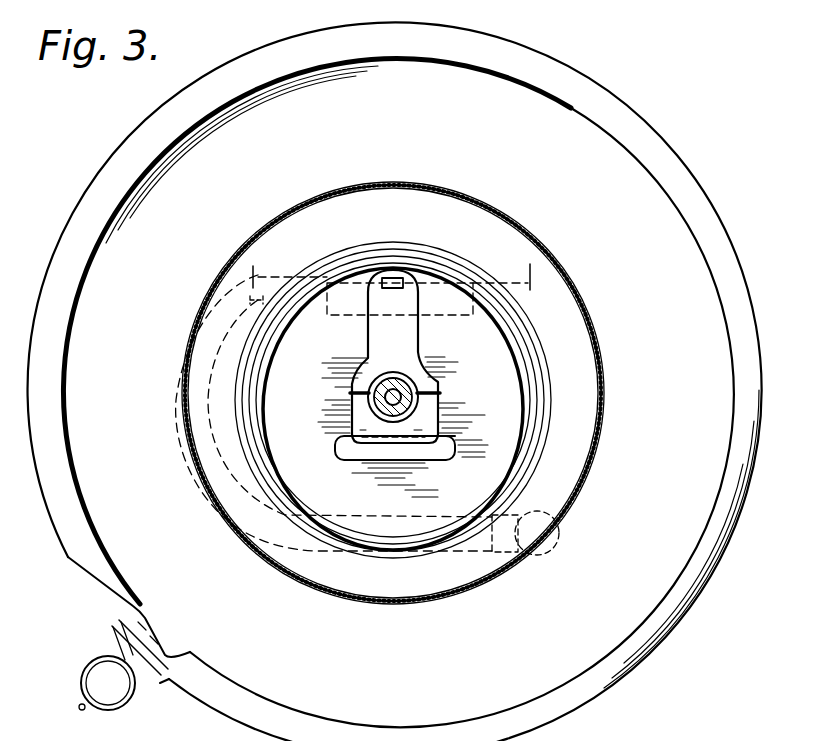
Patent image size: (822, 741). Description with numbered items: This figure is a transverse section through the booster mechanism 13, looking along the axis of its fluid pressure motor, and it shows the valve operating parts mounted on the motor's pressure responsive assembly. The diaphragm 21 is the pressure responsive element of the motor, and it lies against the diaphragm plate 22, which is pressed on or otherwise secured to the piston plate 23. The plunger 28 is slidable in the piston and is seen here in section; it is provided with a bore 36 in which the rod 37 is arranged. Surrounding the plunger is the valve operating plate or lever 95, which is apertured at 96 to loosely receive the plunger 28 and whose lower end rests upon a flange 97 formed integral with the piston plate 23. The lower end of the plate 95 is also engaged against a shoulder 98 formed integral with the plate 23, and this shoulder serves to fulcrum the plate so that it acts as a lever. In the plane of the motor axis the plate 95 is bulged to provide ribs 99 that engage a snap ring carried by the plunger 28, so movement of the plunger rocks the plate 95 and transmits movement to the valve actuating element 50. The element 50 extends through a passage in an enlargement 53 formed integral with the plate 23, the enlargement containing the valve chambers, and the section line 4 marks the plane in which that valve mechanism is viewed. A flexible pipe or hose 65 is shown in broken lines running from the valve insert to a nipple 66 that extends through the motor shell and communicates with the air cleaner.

The booster mechanism 13 is at (617, 99).
The diaphragm plate 22 is at (681, 160).
The diaphragm 21 is at (447, 198).
The piston plate 23 is at (502, 352).
The section line 4- 4 is at (391, 275).
The valve actuating element 50 is at (391, 289).
The enlargement 53 is at (345, 318).
The plunger 28 is at (390, 372).
The valve operating plate or lever 95 is at (412, 340).
The aperture 96 is at (422, 380).
The ribs 99 is at (352, 394).
The bore 36 is at (361, 425).
The rod 37 is at (418, 425).
The shoulder 98 is at (457, 438).
The flange 97 is at (440, 461).
The nipple 66 is at (547, 506).
The flexible pipe or hose 65 is at (175, 421).